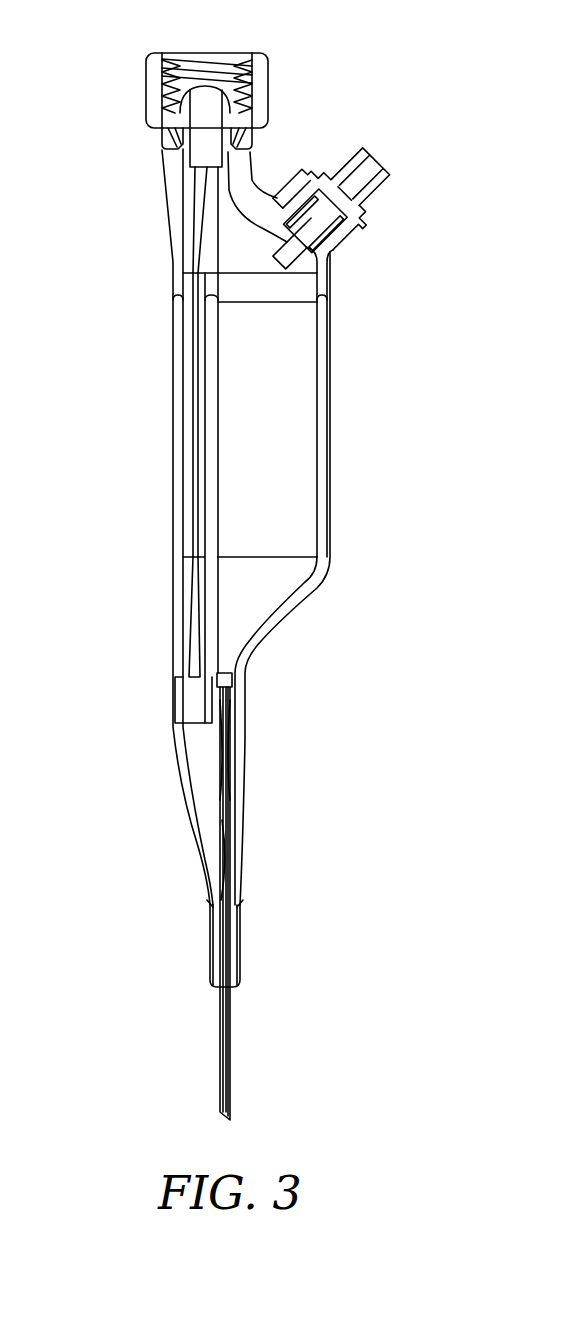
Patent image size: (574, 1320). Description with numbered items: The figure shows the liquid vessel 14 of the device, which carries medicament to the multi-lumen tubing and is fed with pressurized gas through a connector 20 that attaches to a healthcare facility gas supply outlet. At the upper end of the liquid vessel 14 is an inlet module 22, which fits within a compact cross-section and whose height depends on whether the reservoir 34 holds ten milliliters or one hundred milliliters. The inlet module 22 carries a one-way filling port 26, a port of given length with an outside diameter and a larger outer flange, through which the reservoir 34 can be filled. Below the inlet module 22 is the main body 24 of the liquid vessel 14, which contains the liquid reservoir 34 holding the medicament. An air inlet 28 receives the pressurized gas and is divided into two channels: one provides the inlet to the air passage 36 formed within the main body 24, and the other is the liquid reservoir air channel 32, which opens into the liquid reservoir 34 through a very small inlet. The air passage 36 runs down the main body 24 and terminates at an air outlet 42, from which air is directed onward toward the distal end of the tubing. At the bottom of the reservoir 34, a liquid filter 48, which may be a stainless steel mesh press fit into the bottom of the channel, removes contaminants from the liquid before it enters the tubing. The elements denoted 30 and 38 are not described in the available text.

The liquid vessel 14 is at (355, 381).
The connector 20 is at (240, 55).
The inlet module 22 is at (265, 200).
The main body 24 is at (329, 448).
The one-way filling port 26 is at (376, 163).
The air inlet 28 is at (202, 123).
The inlet tube 30 is at (200, 192).
The liquid reservoir air channel 32 is at (227, 200).
The liquid reservoir 34 is at (277, 444).
The air passage 36 is at (190, 387).
The inner tube 38 is at (213, 250).
The air outlet 42 is at (193, 703).
The liquid filter 48 is at (232, 680).